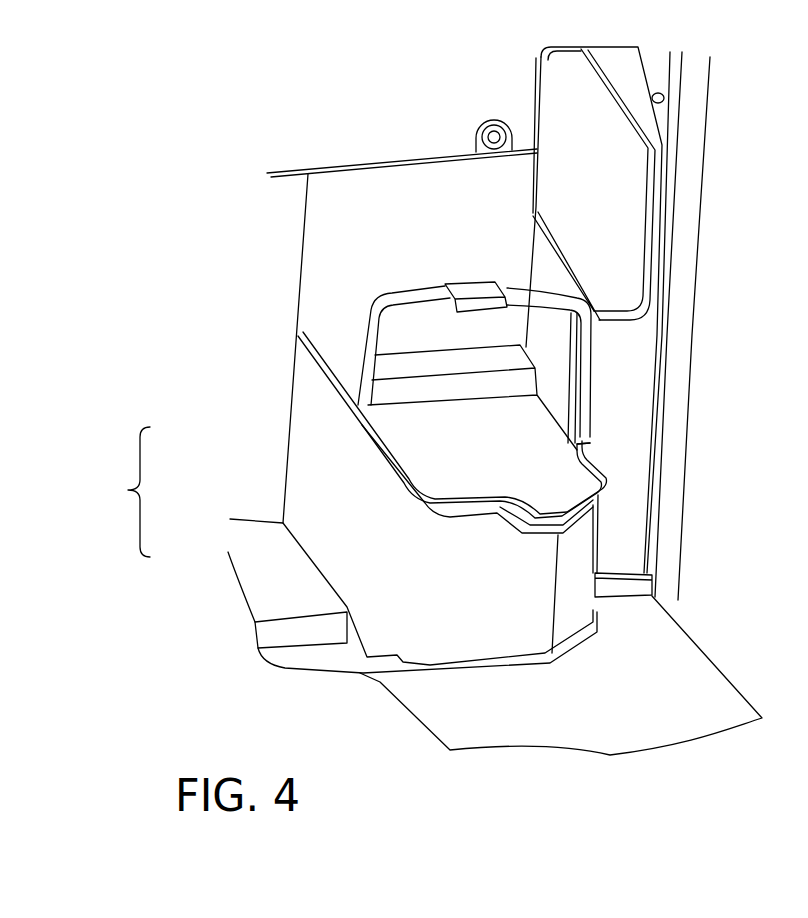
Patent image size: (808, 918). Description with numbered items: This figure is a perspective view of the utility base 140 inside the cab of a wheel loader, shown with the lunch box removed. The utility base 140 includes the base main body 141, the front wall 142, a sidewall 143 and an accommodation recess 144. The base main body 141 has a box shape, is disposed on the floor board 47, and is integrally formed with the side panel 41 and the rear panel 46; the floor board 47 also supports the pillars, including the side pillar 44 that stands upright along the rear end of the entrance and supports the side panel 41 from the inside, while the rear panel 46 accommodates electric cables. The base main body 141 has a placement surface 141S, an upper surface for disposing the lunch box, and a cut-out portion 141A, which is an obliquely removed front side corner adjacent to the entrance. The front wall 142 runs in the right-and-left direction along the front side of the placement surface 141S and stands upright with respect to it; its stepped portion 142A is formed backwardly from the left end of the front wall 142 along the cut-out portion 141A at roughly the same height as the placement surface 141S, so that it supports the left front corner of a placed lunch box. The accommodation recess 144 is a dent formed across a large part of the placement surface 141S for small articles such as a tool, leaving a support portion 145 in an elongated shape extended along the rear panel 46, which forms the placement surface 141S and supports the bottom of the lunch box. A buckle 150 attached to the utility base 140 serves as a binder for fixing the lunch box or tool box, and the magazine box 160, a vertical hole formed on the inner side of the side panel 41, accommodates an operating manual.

The side panel 41 is at (566, 327).
The side pillar 44 is at (674, 103).
The rear panel 46 is at (335, 260).
The floor board 47 is at (667, 659).
The utility base 140 is at (113, 492).
The base main body 141 is at (363, 558).
The cut-out portion 141A is at (575, 589).
The placement surface 141S is at (348, 371).
The front wall 142 is at (457, 500).
The stepped portion 142A is at (583, 504).
The sidewall 143 is at (360, 428).
The accommodation recess 144 is at (362, 410).
The support portion 145 is at (427, 438).
The buckle 150 is at (372, 312).
The magazine box 160 is at (603, 266).